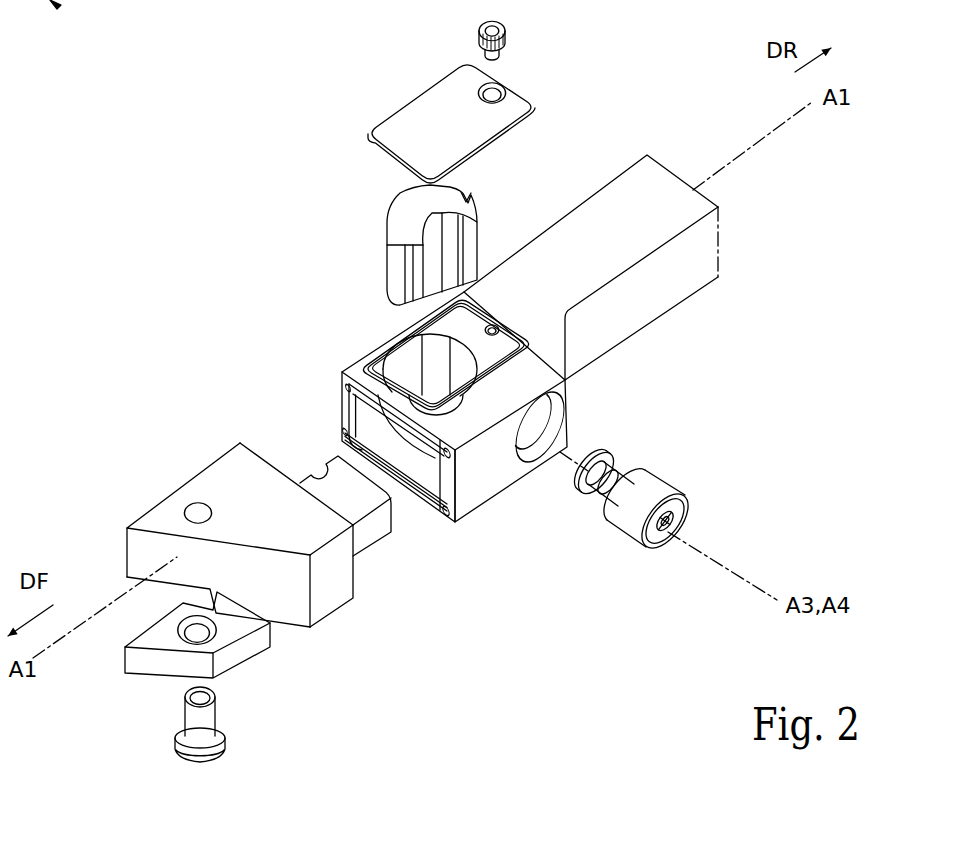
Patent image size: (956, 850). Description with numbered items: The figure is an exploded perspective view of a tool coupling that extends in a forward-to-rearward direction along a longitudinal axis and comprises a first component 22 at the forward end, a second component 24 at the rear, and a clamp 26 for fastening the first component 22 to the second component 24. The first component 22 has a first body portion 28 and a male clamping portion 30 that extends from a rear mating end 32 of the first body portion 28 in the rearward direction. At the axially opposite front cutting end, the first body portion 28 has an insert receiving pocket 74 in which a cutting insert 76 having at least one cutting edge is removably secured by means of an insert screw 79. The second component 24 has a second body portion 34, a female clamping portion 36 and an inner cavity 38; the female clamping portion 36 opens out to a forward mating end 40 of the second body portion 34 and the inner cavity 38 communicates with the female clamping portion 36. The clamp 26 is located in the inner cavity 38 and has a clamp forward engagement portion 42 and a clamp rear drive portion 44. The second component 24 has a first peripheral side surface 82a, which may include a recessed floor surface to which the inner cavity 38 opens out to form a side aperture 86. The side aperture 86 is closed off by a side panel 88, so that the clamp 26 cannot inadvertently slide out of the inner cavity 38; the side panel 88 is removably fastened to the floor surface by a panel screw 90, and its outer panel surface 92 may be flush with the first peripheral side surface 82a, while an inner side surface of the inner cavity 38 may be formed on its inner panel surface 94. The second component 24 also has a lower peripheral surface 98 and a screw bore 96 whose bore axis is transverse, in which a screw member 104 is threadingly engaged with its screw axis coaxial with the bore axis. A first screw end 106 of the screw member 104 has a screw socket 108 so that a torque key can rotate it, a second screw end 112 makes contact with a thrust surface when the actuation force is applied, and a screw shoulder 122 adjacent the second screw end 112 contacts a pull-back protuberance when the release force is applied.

The first component 22 is at (233, 530).
The second component 24 is at (517, 373).
The clamp 26 is at (407, 235).
The first body portion 28 is at (328, 597).
The male clamping portion 30 is at (373, 528).
The rear mating end 32 is at (275, 461).
The second body portion 34 is at (429, 445).
The female clamping portion 36 is at (426, 476).
The inner cavity 38 is at (409, 367).
The forward mating end 40 is at (368, 398).
The clamp forward engagement portion 42 is at (426, 235).
The clamp rear drive portion 44 is at (479, 208).
The insert receiving pocket 74 is at (132, 582).
The cutting insert 76 is at (111, 694).
The insert screw 79 is at (221, 779).
The first peripheral side surface 82a is at (559, 236).
The side aperture 86 is at (404, 357).
The side panel 88 is at (449, 117).
The panel screw 90 is at (522, 37).
The outer panel surface 92 is at (430, 128).
The inner panel surface 94 is at (383, 160).
The screw bore 96 is at (531, 440).
The lower peripheral surface 98 is at (530, 483).
The screw member 104 is at (696, 489).
The first screw end 106 is at (684, 518).
The screw socket 108 is at (673, 534).
The second screw end 112 is at (594, 451).
The screw shoulder 122 is at (621, 447).